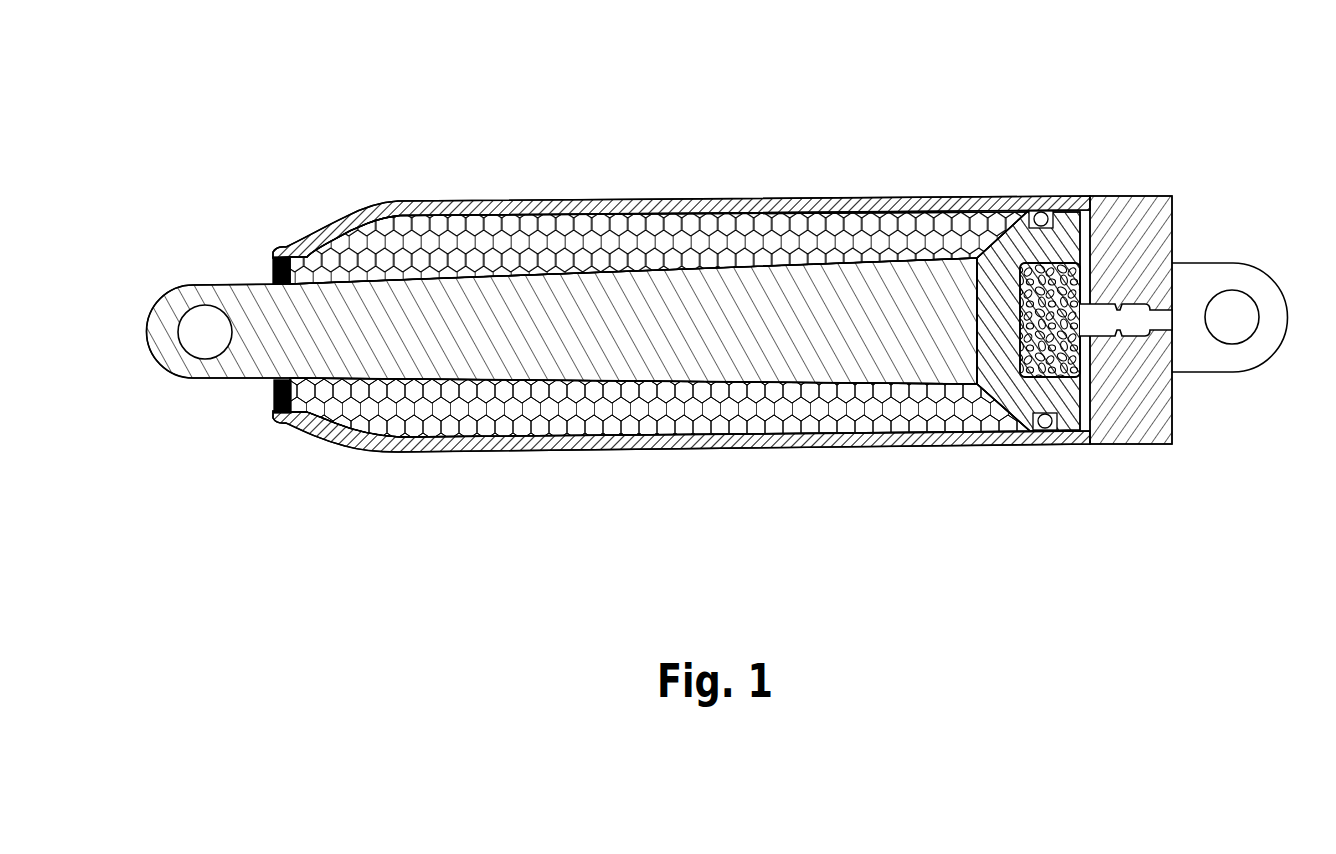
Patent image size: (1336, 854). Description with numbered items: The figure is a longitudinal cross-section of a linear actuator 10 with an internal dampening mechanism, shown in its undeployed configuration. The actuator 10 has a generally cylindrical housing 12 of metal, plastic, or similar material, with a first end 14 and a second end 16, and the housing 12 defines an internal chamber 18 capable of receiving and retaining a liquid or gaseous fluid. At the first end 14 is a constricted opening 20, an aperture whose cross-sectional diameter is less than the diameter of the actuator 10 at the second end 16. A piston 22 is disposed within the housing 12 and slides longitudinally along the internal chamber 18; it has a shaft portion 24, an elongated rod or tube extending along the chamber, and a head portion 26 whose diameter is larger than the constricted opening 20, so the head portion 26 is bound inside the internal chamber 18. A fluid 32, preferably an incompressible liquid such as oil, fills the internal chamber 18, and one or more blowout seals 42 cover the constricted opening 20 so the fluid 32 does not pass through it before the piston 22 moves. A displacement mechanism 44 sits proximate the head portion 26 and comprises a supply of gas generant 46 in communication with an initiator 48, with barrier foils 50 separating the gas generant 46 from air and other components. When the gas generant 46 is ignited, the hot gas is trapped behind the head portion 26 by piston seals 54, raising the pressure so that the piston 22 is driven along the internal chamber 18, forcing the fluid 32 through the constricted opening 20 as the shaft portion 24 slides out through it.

The linear actuator 10 is at (609, 102).
The housing 12 is at (681, 295).
The first end 14 is at (282, 216).
The second end 16 is at (1253, 231).
The internal chamber 18 is at (566, 226).
The constricted opening 20 is at (248, 253).
The piston 22 is at (753, 240).
The shaft portion 24 is at (660, 285).
The head portion 26 is at (983, 194).
The fluid 32 is at (660, 322).
The blowout seal 42 is at (268, 254).
The displacement mechanism 44 is at (1112, 278).
The gas generant 46 is at (1062, 290).
The initiator 48 is at (1178, 263).
The barrier foil 50 is at (1086, 315).
The piston seal 54 is at (1038, 205).